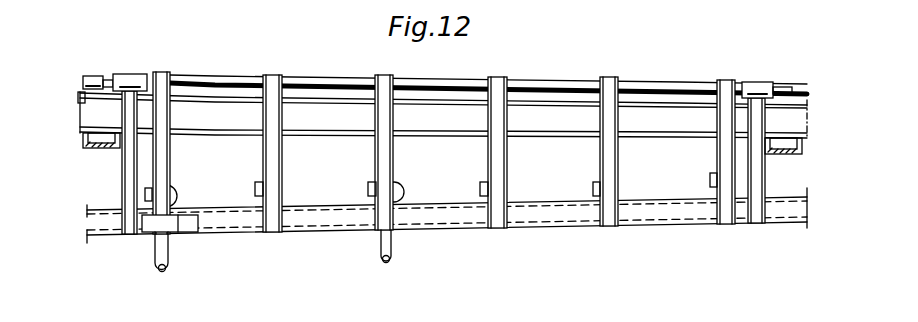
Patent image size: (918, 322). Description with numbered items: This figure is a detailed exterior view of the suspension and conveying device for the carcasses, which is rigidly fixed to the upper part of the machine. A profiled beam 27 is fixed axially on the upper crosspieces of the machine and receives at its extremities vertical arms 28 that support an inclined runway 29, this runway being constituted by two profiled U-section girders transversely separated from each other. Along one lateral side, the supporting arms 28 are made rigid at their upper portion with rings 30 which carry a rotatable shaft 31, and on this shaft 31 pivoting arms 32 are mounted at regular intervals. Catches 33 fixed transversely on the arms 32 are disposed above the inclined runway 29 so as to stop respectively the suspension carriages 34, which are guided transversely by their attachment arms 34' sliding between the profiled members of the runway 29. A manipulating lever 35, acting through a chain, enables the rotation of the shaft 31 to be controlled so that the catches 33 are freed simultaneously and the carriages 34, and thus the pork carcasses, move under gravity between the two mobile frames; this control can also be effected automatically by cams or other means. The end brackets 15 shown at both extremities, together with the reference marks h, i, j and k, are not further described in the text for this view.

The end bracket 15 is at (118, 167).
The profiled beam 27 is at (317, 113).
The vertical arms 28 is at (125, 222).
The inclined runway 29 is at (443, 217).
The rings 30 is at (138, 75).
The rotatable shaft 31 is at (418, 87).
The pivoting arms 32 is at (268, 110).
The catches 33 is at (258, 196).
The suspension carriages 34 is at (304, 182).
The attachment arms 34' is at (292, 253).
The manipulating lever 35 is at (90, 75).
The reference line h is at (130, 62).
The reference line i is at (129, 262).
The reference line j is at (272, 62).
The reference line k is at (270, 262).